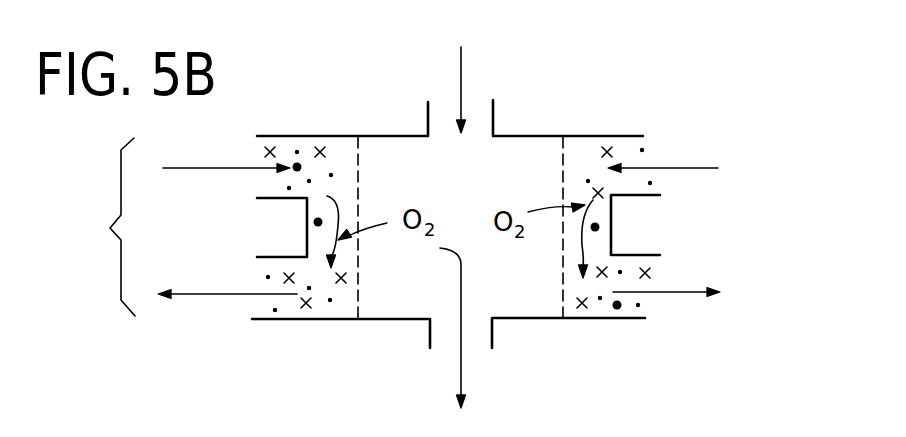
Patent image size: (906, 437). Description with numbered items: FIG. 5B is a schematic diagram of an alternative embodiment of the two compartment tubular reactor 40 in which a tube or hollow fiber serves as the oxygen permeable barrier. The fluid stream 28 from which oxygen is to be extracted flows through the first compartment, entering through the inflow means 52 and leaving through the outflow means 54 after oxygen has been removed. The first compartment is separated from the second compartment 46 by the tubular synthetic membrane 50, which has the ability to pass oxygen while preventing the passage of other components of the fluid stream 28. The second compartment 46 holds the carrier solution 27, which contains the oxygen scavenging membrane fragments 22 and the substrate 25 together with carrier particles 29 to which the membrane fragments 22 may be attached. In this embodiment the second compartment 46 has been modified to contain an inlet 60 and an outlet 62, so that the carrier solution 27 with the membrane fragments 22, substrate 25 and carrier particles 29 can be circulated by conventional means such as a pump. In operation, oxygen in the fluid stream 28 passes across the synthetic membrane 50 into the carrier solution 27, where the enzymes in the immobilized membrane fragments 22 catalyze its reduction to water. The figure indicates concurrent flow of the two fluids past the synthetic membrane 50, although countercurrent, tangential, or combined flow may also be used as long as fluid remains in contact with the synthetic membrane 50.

The membrane fragments 22 is at (329, 302).
The substrate 25 is at (302, 319).
The carrier solution 27 is at (343, 303).
The fluid stream 28 is at (500, 152).
The carrier particles 29 is at (619, 310).
The two compartment reactor 40 is at (96, 227).
The second compartment 46 is at (296, 248).
The synthetic membrane 50 is at (358, 157).
The inflow means 52 is at (490, 82).
The outflow means 54 is at (487, 366).
The inlet 60 is at (242, 147).
The outlet 62 is at (244, 320).